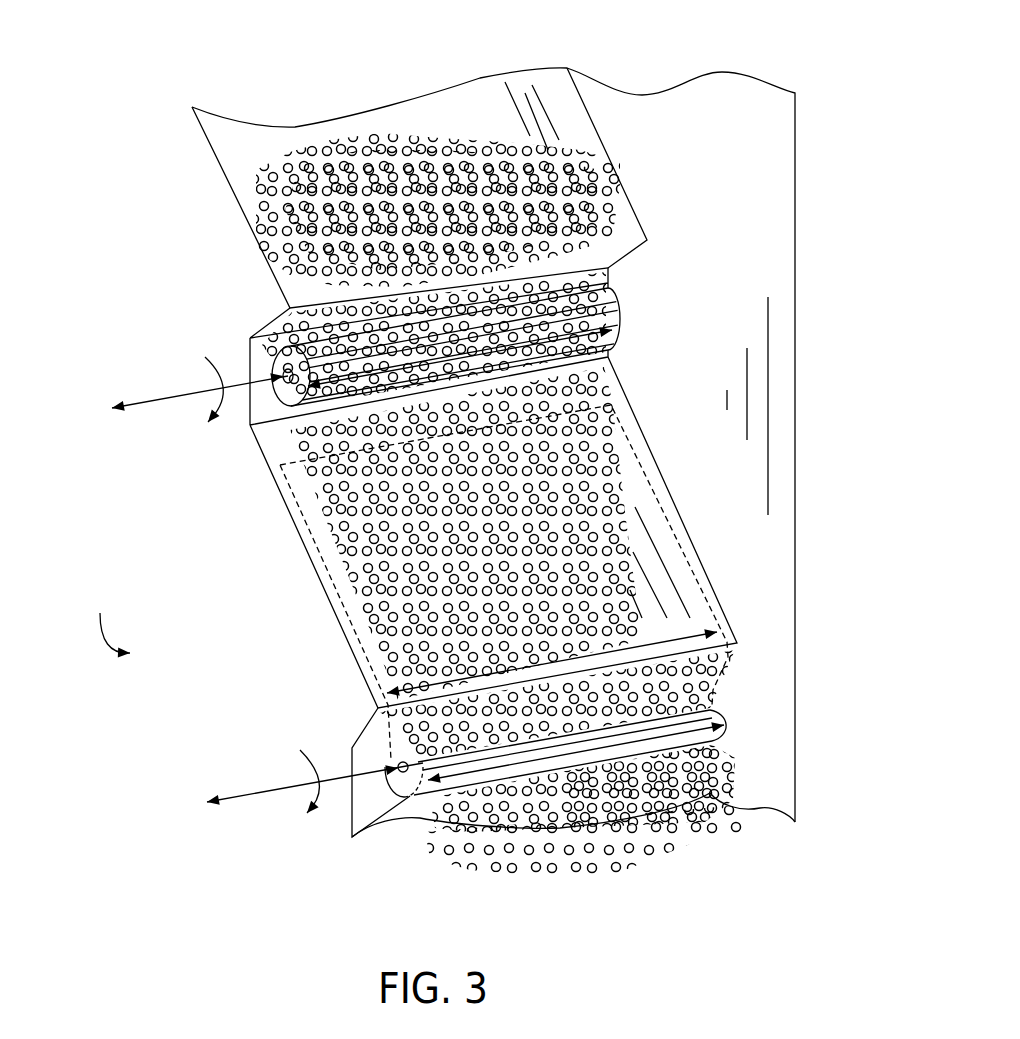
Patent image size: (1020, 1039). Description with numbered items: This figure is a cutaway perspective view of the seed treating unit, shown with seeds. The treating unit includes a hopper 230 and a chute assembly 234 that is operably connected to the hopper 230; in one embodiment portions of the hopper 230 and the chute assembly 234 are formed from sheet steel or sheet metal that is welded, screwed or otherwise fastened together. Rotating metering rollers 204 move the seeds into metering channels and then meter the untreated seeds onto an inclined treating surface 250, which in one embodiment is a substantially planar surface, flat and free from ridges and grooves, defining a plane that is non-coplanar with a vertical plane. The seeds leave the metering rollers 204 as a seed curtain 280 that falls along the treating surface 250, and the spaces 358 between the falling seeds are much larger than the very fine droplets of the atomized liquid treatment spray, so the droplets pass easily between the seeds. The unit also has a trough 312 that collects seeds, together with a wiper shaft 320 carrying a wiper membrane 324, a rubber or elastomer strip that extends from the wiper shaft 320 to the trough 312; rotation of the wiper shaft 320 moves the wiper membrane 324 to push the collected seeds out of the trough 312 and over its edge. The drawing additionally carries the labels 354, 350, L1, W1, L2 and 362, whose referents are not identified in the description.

The hopper 230 is at (224, 177).
The metering rollers 204 is at (278, 358).
The first roller surface 354 is at (613, 297).
The first roller length L1 is at (609, 356).
The first rotation axis 350 is at (155, 402).
The treating surface 250 is at (262, 443).
The spaces 358 is at (590, 447).
The seed curtain 280 is at (315, 515).
The region width W1 is at (417, 690).
The chute assembly 234 is at (100, 622).
The trough 312 is at (415, 799).
The wiper shaft 320 is at (415, 759).
The wiper membrane 324 is at (396, 792).
The second roller length L2 is at (713, 707).
The second rotation axis 362 is at (265, 790).